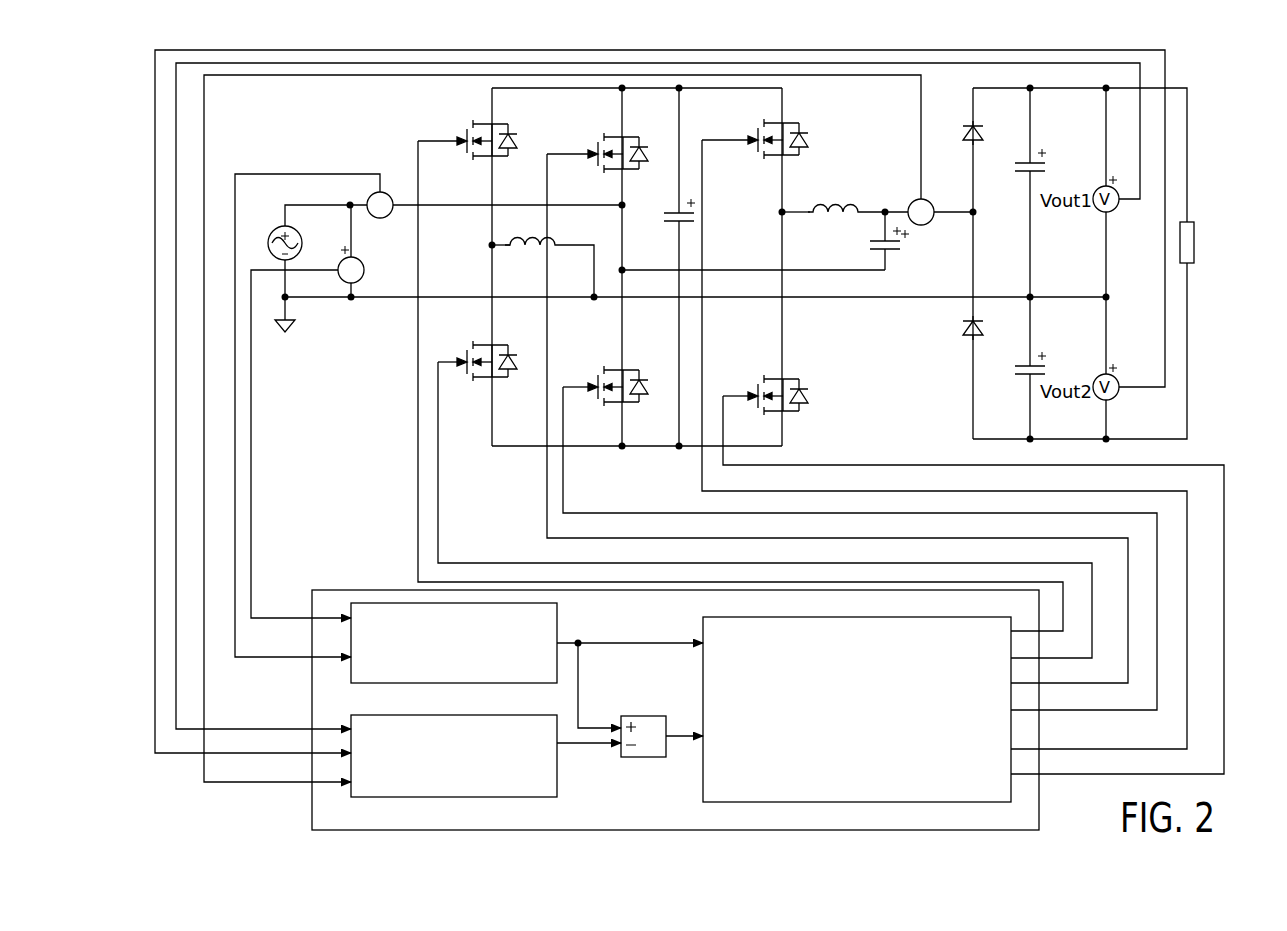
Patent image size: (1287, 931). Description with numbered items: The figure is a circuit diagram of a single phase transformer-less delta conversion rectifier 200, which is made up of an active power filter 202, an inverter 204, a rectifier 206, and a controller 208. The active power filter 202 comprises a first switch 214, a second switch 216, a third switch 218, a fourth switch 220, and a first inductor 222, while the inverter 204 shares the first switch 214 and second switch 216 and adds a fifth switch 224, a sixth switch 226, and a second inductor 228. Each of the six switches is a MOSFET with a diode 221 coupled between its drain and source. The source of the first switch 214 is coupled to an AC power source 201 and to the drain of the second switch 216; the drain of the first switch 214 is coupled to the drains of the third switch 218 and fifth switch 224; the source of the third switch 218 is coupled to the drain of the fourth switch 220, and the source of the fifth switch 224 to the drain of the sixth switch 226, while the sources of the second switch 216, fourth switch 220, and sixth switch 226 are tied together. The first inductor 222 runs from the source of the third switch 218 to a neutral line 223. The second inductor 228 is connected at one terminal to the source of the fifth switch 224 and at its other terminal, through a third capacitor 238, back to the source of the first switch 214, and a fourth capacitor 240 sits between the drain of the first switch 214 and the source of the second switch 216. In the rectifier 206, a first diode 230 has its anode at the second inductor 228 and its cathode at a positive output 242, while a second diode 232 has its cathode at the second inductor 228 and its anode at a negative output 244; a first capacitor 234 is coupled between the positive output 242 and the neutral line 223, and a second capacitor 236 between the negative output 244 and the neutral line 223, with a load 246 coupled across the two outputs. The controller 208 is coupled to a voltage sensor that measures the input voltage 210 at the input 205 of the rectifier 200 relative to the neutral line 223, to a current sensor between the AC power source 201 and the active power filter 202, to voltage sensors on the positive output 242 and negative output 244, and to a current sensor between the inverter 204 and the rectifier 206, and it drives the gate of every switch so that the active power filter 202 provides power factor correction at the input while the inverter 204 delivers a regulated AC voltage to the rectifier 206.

The single phase transformer-less delta conversion rectifier 200 is at (134, 104).
The AC power source 201 is at (277, 231).
The active power filter 202 is at (517, 463).
The inverter 204 is at (841, 117).
The input 205 is at (447, 204).
The rectifier 206 is at (940, 352).
The controller 208 is at (348, 592).
The input voltage 210 is at (360, 261).
The first switch (Q1) 214 is at (601, 140).
The second switch (Q2) 216 is at (604, 374).
The third switch (Q3) 218 is at (471, 127).
The fourth switch (Q4) 220 is at (472, 349).
The diode 221 is at (509, 152).
The first inductor 222 is at (536, 249).
The neutral line 223 is at (394, 300).
The fifth switch (Q5) 224 is at (761, 127).
The sixth switch (Q6) 226 is at (762, 383).
The second inductor 228 is at (846, 206).
The first diode 230 is at (967, 146).
The second diode 232 is at (963, 330).
The first capacitor 234 is at (1041, 160).
The second capacitor 236 is at (1020, 380).
The third capacitor 238 is at (895, 255).
The fourth capacitor 240 is at (675, 225).
The positive output 242 is at (1187, 88).
The negative output 244 is at (1187, 439).
The load 246 is at (1190, 222).